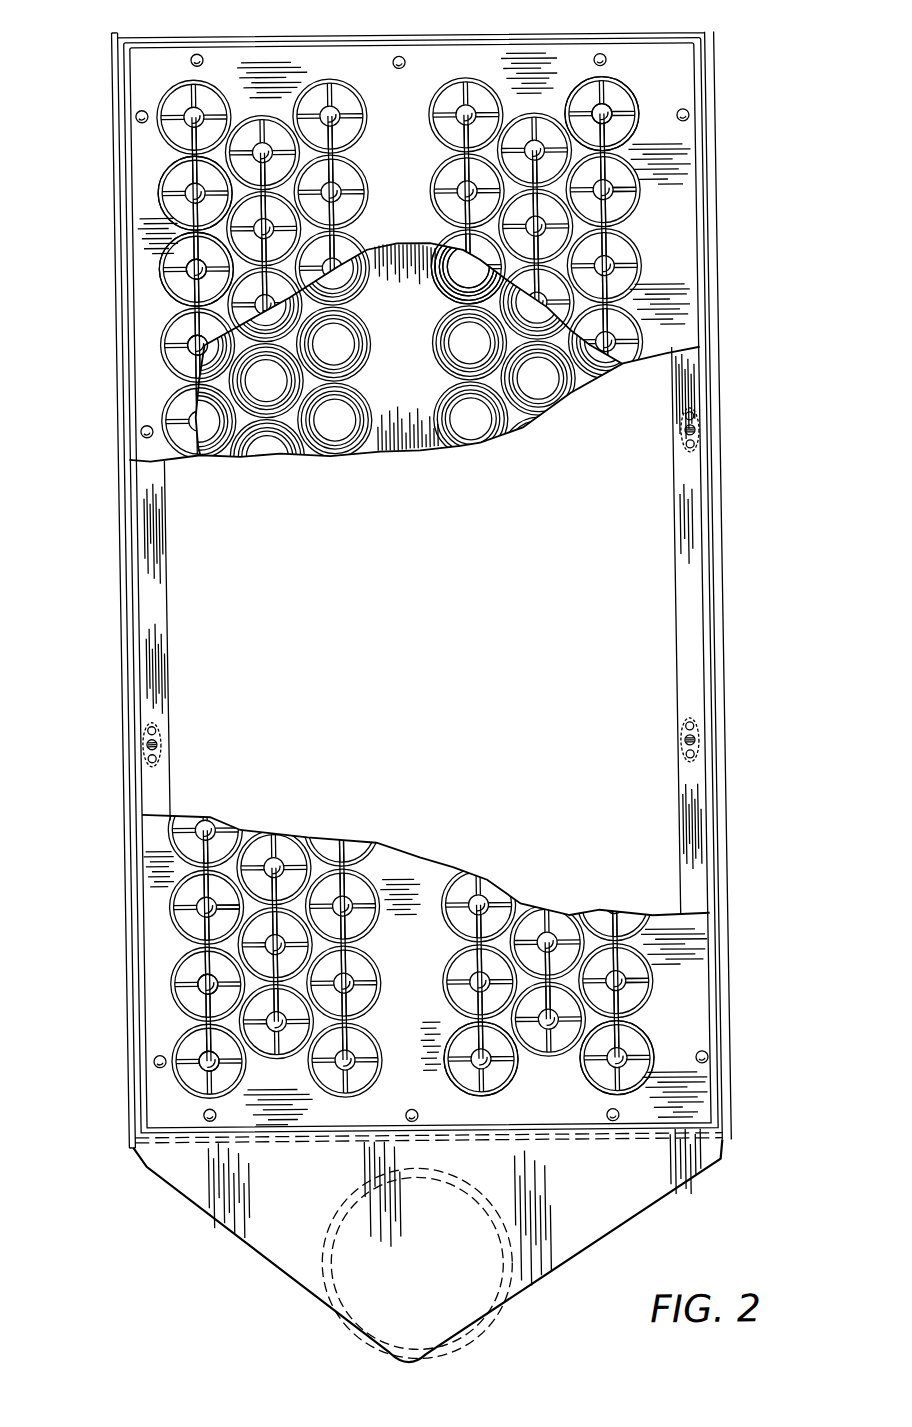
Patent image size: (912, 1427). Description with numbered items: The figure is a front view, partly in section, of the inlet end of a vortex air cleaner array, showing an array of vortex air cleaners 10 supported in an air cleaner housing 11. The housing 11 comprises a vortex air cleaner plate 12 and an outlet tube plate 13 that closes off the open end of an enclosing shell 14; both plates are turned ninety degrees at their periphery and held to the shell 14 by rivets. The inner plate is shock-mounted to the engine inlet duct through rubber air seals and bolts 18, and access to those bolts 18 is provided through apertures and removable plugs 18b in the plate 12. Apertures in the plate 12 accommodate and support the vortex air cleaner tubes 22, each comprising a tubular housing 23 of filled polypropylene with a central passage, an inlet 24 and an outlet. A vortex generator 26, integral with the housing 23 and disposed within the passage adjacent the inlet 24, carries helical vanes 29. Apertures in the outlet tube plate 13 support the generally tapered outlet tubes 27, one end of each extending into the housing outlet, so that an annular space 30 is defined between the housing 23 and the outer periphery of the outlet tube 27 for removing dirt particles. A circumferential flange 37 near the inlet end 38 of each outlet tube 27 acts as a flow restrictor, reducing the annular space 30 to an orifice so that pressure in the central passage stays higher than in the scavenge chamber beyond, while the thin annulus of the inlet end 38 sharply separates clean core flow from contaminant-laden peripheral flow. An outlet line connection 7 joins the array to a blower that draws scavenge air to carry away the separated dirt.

The outlet line connection 7 is at (392, 1269).
The vortex air cleaner 10 is at (425, 180).
The air cleaner housing 11 is at (720, 156).
The vortex air cleaner plate 12 is at (384, 207).
The outlet tube plate 13 is at (388, 414).
The enclosing shell 14 is at (705, 290).
The bolt 18 is at (673, 440).
The removable plug 18b is at (391, 66).
The vortex air cleaner tube 22 is at (587, 80).
The tubular housing 23 is at (428, 289).
The inlet 24 is at (617, 113).
The vortex generator 26 is at (607, 116).
The outlet tube 27 is at (440, 385).
The vane 29 is at (616, 215).
The annular space 30 is at (316, 434).
The circumferential flange 37 is at (603, 378).
The inlet end 38 is at (556, 378).